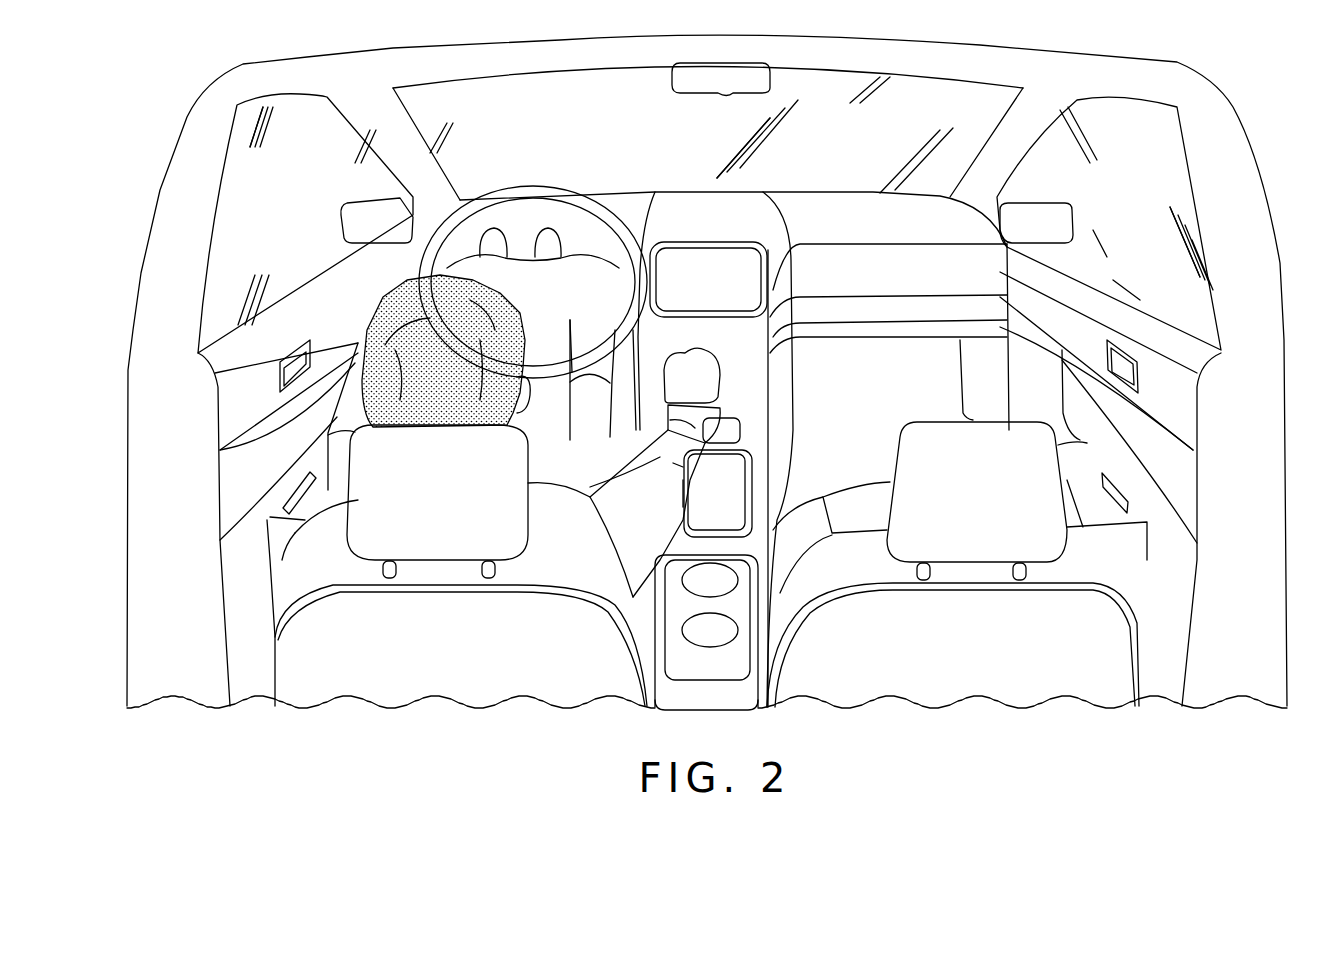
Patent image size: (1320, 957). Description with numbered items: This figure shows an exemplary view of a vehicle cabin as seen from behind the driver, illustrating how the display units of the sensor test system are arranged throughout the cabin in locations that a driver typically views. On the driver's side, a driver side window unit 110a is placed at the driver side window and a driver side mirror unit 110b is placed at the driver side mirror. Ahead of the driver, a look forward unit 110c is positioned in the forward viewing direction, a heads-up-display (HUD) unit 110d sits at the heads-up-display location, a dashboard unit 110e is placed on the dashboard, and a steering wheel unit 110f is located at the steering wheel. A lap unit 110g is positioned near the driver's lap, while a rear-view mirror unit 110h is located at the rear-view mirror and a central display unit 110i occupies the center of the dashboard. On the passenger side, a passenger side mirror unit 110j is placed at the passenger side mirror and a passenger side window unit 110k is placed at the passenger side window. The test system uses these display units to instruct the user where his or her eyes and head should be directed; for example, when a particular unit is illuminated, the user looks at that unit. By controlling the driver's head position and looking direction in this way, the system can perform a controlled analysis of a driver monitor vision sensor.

The driver side window unit 110a is at (367, 313).
The driver side mirror unit 110b is at (403, 280).
The look forward unit 110c is at (527, 322).
The heads-up-display (HUD) unit 110d is at (469, 270).
The dashboard unit 110e is at (495, 298).
The steering wheel unit 110f is at (527, 333).
The lap unit 110g is at (530, 413).
The rear-view mirror unit 110h is at (527, 315).
The central display unit 110i is at (527, 337).
The passenger side mirror unit 110j is at (527, 341).
The passenger side window unit 110k is at (527, 355).